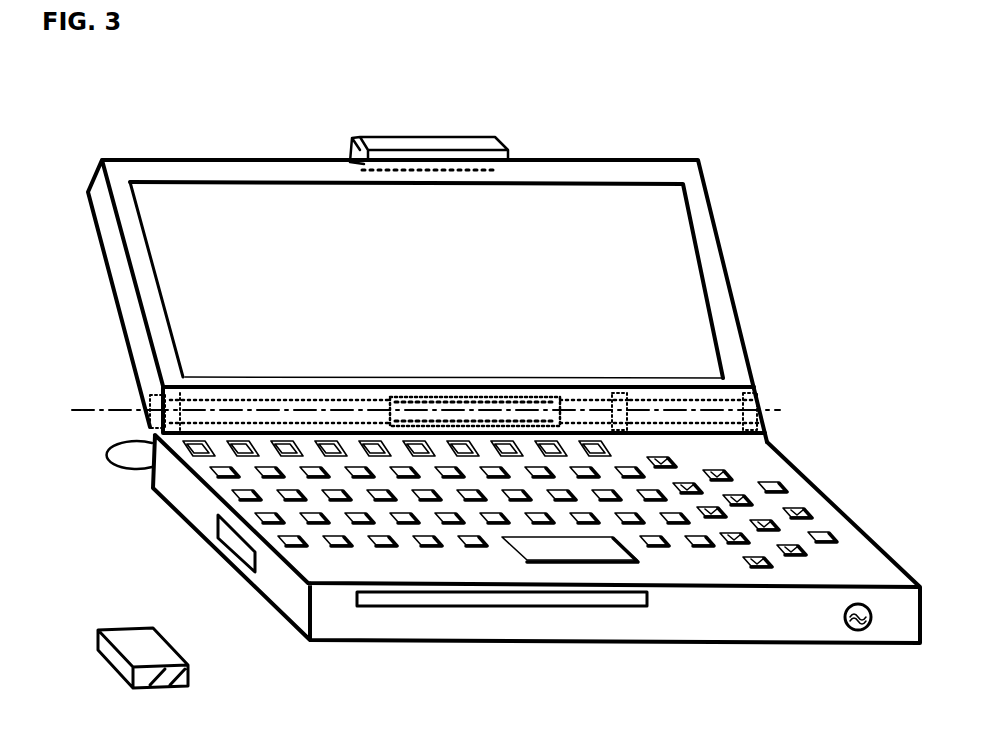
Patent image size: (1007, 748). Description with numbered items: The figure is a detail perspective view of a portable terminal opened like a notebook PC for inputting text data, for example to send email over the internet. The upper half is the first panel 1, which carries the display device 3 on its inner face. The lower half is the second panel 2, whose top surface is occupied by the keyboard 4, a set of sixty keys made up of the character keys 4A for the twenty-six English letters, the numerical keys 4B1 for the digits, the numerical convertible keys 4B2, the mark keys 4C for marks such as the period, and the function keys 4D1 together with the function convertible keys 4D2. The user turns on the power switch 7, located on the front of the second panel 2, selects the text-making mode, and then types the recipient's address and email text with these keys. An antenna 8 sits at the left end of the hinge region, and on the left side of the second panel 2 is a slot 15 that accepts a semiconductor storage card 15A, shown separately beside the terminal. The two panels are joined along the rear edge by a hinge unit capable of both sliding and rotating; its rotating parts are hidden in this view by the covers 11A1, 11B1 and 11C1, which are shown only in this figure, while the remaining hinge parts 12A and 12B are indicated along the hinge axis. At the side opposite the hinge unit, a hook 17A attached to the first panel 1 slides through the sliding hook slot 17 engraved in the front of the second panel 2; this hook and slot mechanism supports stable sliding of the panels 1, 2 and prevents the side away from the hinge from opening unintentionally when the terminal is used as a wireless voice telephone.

The first panel 1 is at (723, 315).
The second panel 2 is at (722, 632).
The display device 3 is at (663, 232).
The keyboard 4 is at (342, 548).
The character keys 4A is at (273, 495).
The numerical keys 4B1 is at (188, 445).
The numerical convertible keys 4B2 is at (733, 480).
The mark keys 4C is at (695, 545).
The function keys 4D1 is at (542, 545).
The function convertible keys 4D2 is at (835, 535).
The power switch 7 is at (857, 632).
The antenna 8 is at (143, 455).
The cover 11A1 is at (448, 412).
The cover 11B1 is at (192, 395).
The cover 11C1 is at (668, 395).
The hinge unit part 12A is at (293, 413).
The hinge unit part 12B is at (600, 398).
The slot 15 is at (228, 543).
The semiconductor storage card 15A is at (187, 687).
The sliding hook slot 17 is at (567, 607).
The hook 17A is at (408, 150).